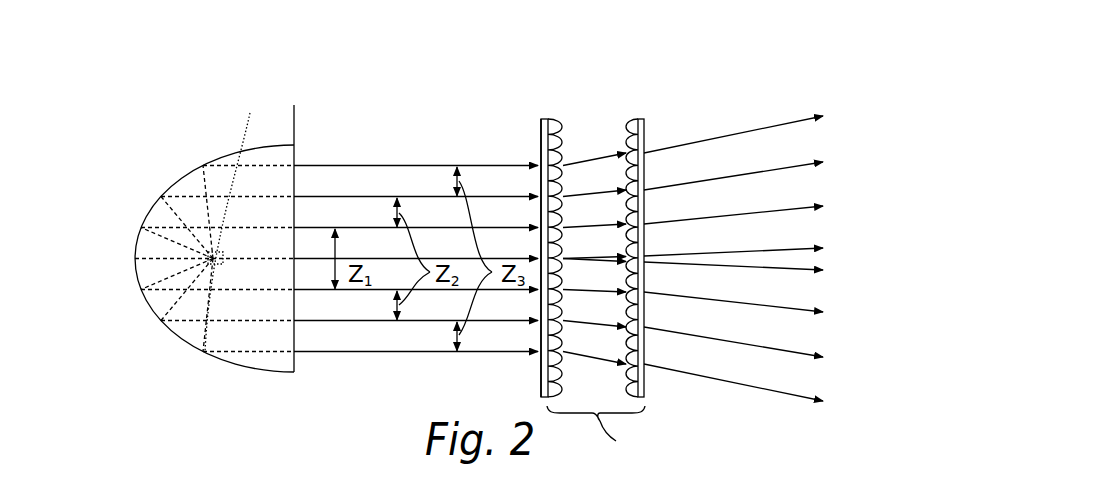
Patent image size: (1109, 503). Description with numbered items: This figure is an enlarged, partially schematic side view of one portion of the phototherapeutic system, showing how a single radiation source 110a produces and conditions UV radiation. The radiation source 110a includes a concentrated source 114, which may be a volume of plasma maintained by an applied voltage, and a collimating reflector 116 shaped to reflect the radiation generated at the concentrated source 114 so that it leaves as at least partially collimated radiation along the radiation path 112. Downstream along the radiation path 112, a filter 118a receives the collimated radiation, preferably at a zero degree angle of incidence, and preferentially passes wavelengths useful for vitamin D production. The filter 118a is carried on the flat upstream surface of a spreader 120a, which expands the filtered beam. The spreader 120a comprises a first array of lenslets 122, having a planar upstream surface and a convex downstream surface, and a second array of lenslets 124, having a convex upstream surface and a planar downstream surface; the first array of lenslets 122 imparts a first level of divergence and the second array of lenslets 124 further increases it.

The radiation source 110a is at (194, 237).
The radiation path 112 is at (366, 165).
The concentrated source 114 is at (235, 222).
The collimating reflector 116 is at (149, 307).
The filter 118a is at (538, 150).
The spreader 120a is at (597, 258).
The first array of lenslets 122 is at (530, 223).
The second array of lenslets 124 is at (644, 128).